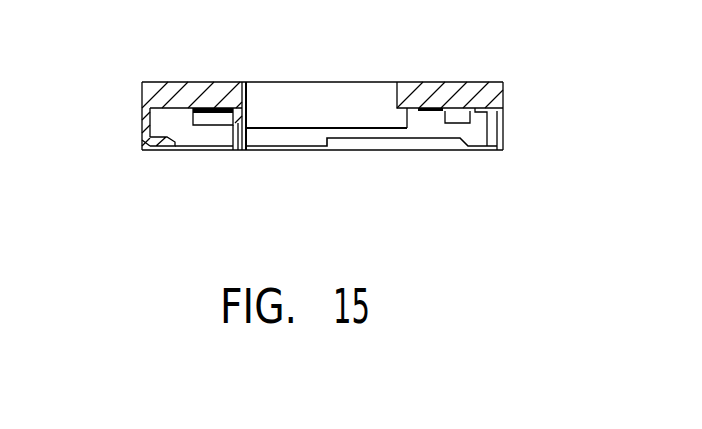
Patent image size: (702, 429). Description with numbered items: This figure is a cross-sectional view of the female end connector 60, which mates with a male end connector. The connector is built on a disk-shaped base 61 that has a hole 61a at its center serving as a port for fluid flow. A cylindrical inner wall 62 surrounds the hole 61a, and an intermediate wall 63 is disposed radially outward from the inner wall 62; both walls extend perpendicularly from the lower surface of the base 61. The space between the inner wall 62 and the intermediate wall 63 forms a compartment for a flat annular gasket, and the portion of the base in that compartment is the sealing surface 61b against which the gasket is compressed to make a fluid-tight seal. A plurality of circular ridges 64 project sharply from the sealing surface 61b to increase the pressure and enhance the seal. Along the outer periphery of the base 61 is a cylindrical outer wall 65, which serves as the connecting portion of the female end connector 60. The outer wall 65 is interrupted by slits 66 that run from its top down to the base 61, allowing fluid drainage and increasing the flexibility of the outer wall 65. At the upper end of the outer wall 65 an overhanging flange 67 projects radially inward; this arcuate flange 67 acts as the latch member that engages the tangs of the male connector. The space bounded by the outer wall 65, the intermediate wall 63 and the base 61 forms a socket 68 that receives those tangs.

The female end connector 60 is at (137, 105).
The disk-shaped base 61 is at (168, 82).
The hole 61a is at (272, 92).
The sealing surface 61b is at (430, 111).
The cylindrical inner wall 62 is at (397, 105).
The intermediate wall 63 is at (470, 113).
The circular ridges 64 is at (228, 108).
The cylindrical outer wall 65 is at (150, 128).
The slits 66 is at (236, 152).
The overhanging flange 67 is at (157, 152).
The socket 68 is at (170, 117).